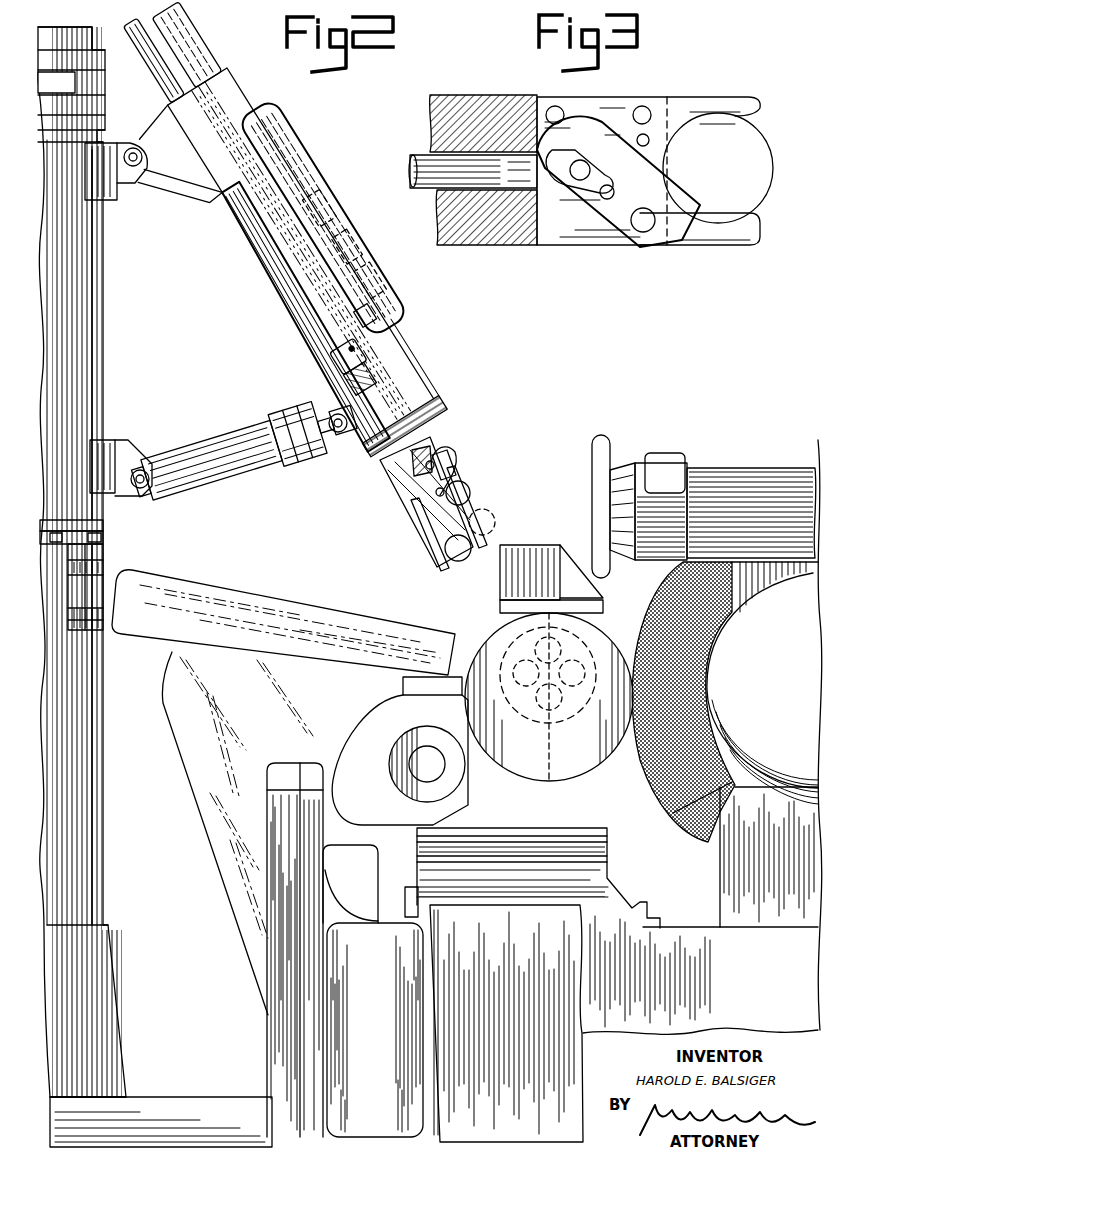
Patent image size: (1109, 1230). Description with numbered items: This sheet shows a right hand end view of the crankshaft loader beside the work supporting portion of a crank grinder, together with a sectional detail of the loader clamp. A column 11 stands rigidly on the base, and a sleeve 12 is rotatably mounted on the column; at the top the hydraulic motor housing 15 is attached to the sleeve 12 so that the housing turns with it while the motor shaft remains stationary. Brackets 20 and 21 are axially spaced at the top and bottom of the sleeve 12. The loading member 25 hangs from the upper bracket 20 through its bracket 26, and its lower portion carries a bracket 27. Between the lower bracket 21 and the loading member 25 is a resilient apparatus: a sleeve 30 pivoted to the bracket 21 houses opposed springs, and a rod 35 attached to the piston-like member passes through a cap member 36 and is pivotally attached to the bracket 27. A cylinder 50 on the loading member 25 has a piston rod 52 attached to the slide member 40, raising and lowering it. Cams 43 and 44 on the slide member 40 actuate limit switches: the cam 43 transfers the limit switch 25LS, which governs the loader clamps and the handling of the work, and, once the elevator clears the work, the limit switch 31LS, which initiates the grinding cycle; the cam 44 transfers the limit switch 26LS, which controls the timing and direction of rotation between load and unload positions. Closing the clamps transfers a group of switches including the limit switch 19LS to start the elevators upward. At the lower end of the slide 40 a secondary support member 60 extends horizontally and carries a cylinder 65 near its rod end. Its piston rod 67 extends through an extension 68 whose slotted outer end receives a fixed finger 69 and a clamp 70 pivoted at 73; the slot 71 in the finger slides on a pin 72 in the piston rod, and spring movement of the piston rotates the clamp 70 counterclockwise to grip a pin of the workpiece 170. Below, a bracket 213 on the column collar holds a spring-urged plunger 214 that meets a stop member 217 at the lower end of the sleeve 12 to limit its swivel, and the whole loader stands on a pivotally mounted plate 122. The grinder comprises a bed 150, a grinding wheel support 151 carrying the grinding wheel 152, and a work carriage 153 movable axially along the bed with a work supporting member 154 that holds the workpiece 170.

In FIG. 2, the column 11 is at (100, 686).
In FIG. 2, the sleeve 12 is at (104, 312).
In FIG. 2, the motor housing 15 is at (90, 40).
In FIG. 2, the bracket 20 is at (136, 185).
In FIG. 2, the bracket 21 is at (130, 496).
In FIG. 2, the loading member 25 is at (255, 115).
In FIG. 2, the bracket 26 is at (181, 190).
In FIG. 2, the bracket 27 is at (352, 433).
In FIG. 2, the sleeve 30 is at (200, 450).
In FIG. 2, the rod 35 is at (328, 446).
In FIG. 2, the cap member 36 is at (290, 466).
In FIG. 2, the slide member 40 is at (200, 46).
In FIG. 2, the cam 43 is at (352, 318).
In FIG. 2, the cam 44 is at (293, 243).
In FIG. 2, the cylinder 50 is at (241, 240).
In FIG. 2, the piston rod 52 is at (151, 65).
In FIG. 2, the secondary support member 60 is at (434, 425).
In FIG. 2, the cylinder 65 is at (432, 380).
In FIG. 2, the piston rod 67 is at (442, 455).
In FIG. 3, the piston rod 67 is at (424, 192).
In FIG. 2, the extension 68 is at (412, 470).
In FIG. 3, the extension 68 is at (470, 96).
In FIG. 2, the finger 69 is at (470, 500).
In FIG. 3, the finger 69 is at (696, 96).
In FIG. 2, the clamp 70 is at (428, 512).
In FIG. 3, the clamp 70 is at (722, 244).
In FIG. 2, the slot 71 is at (436, 494).
In FIG. 3, the slot 71 is at (604, 199).
In FIG. 2, the pin 72 is at (456, 478).
In FIG. 3, the pin 72 is at (584, 163).
In FIG. 2, the pivot 73 is at (426, 470).
In FIG. 3, the pivot 73 is at (646, 232).
In FIG. 2, the plate 122 is at (172, 1097).
In FIG. 2, the bed 150 is at (650, 926).
In FIG. 2, the grinding wheel support 151 is at (672, 812).
In FIG. 2, the grinding wheel 152 is at (646, 626).
In FIG. 2, the work carriage 153 is at (620, 897).
In FIG. 2, the work supporting member 154 is at (496, 636).
In FIG. 2, the workpiece 170 is at (600, 762).
In FIG. 2, the bracket 213 is at (80, 592).
In FIG. 2, the plunger 214 is at (107, 540).
In FIG. 2, the stop member 217 is at (107, 527).
In FIG. 2, the limit switch 19LS is at (340, 356).
In FIG. 2, the limit switch 25LS is at (388, 283).
In FIG. 2, the limit switch 26LS is at (330, 200).
In FIG. 2, the limit switch 31LS is at (364, 246).